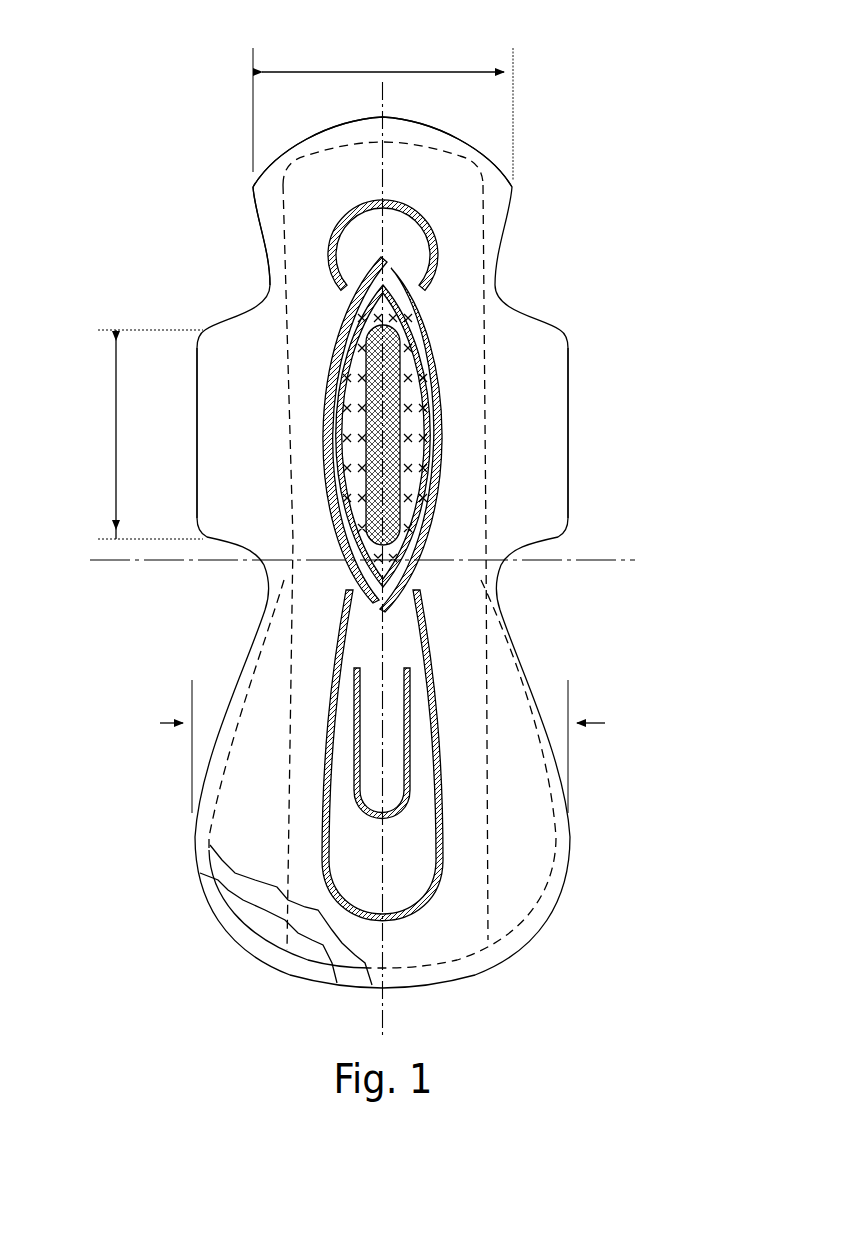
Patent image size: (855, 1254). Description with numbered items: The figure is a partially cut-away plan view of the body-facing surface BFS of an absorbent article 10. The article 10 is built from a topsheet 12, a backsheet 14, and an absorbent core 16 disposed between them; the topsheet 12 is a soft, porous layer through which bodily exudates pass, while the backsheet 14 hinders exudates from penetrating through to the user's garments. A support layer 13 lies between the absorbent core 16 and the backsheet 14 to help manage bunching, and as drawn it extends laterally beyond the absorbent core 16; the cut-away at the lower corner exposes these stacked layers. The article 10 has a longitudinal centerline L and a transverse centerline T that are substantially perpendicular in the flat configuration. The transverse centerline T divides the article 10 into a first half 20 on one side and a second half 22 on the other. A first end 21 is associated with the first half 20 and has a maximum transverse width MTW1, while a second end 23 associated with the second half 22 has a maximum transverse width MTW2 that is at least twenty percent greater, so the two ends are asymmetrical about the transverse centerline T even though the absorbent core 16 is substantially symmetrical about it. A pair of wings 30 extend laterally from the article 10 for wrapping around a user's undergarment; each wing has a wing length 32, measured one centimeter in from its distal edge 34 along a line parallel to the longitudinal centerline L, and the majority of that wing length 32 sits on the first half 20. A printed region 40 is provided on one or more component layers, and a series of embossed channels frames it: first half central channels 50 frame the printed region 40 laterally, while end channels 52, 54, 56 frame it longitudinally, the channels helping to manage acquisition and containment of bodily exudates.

The absorbent article 10 is at (144, 220).
The topsheet 12 is at (497, 213).
The support layer 13 is at (235, 876).
The backsheet 14 is at (222, 913).
The absorbent core 16 is at (317, 930).
The first half 20 is at (580, 319).
The first end 21 is at (253, 187).
The second half 22 is at (544, 661).
The second end 23 is at (505, 943).
The wings 30 is at (340, 335).
The wing length 32 is at (112, 445).
The distal edge 34 is at (197, 487).
The printed region 40 is at (428, 345).
The first half central channels 50 is at (440, 502).
The end channel 52 is at (420, 222).
The end channel 54 is at (340, 673).
The end channel 56 is at (357, 712).
The body-facing surface BFS is at (268, 237).
The longitudinal centerline L is at (385, 88).
The transverse centerline T is at (605, 560).
The maximum transverse width of the first end MTW1 is at (482, 72).
The maximum transverse width of the second end MTW2 is at (417, 746).